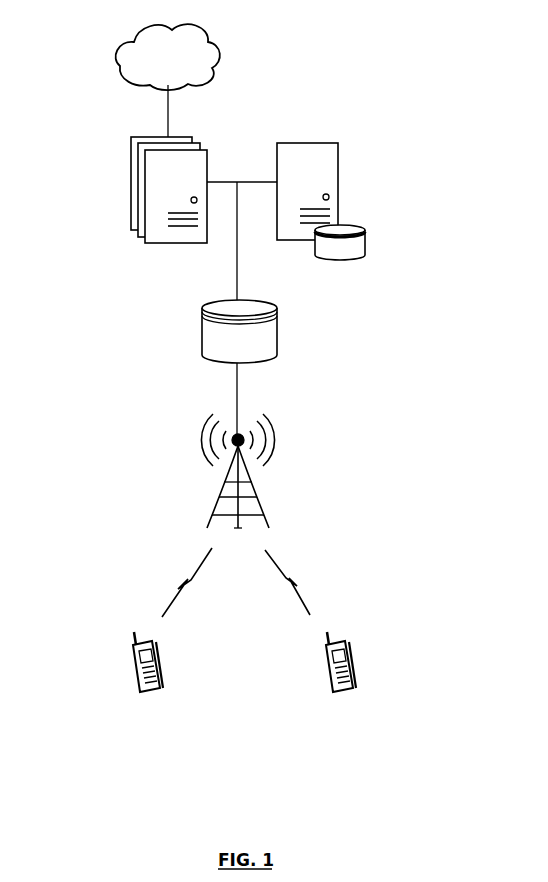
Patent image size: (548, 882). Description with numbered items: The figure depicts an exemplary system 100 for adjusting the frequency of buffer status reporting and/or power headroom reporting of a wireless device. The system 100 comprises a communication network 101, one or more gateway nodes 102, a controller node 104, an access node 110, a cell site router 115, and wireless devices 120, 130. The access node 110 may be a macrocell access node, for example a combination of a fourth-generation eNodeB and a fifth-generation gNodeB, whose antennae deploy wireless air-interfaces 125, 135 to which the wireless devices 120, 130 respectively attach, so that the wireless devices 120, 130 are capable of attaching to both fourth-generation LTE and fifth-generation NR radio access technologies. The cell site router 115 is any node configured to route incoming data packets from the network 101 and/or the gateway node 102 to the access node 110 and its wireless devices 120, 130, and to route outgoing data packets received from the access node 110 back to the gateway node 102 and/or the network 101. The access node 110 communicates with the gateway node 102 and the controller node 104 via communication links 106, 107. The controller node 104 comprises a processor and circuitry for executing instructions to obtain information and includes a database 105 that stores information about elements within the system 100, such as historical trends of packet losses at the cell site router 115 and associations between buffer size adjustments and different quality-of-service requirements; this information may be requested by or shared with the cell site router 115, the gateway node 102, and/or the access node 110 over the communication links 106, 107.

The system 100 is at (352, 42).
The communication network 101 is at (183, 62).
The gateway node 102 is at (132, 137).
The controller node 104 is at (338, 143).
The database 105 is at (365, 226).
The communication link 106 is at (238, 401).
The communication link 107 is at (237, 283).
The access node 110 is at (225, 490).
The cell site router 115 is at (277, 331).
The wireless device 120 is at (131, 677).
The wireless air-interface 125 is at (183, 585).
The wireless device 130 is at (325, 676).
The wireless air-interface 135 is at (295, 576).